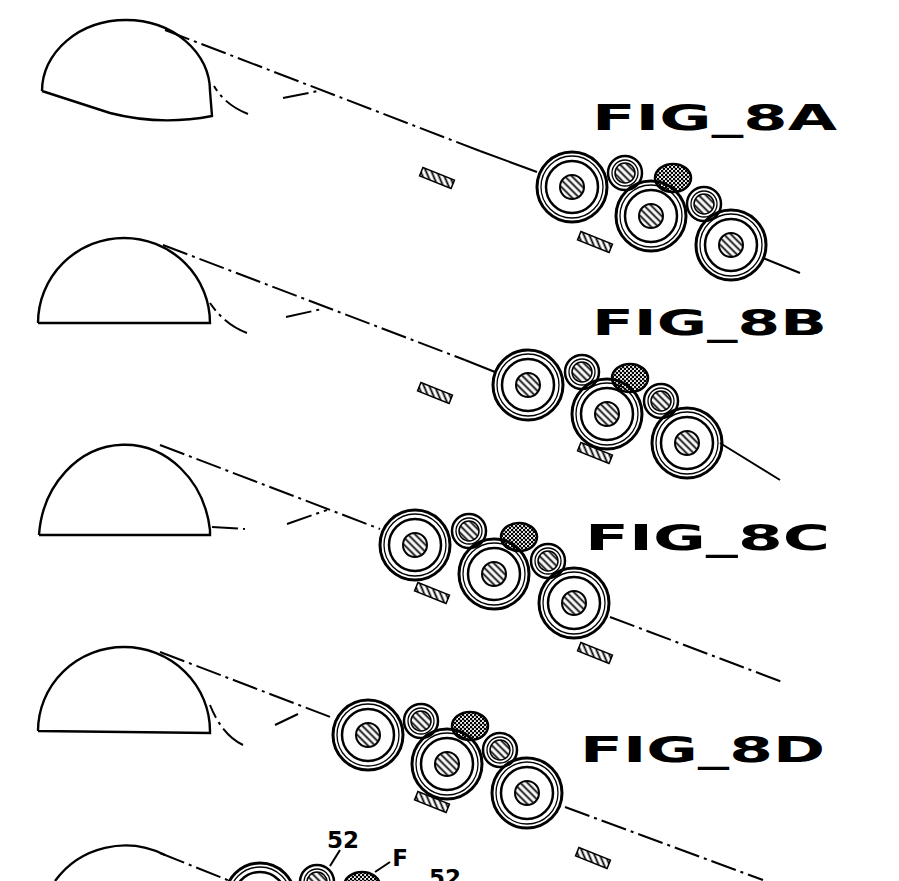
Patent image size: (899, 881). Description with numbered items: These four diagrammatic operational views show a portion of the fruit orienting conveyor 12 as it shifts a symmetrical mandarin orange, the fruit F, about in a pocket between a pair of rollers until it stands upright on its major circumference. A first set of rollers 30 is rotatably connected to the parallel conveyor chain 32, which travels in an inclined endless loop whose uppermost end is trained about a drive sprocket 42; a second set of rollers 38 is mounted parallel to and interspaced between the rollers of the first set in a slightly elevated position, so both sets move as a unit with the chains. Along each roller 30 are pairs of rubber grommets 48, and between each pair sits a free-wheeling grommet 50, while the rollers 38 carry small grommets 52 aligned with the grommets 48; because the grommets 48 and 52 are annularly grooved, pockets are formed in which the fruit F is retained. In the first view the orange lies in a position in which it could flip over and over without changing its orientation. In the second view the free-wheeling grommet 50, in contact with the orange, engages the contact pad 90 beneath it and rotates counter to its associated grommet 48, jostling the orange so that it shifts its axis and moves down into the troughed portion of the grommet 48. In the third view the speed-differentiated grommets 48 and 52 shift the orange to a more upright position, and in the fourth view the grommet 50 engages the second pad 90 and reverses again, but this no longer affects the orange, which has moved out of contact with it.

In FIG. 8A, the conveyor 12 is at (325, 85).
In FIG. 8B, the conveyor 12 is at (295, 293).
In FIG. 8C, the conveyor 12 is at (305, 495).
In FIG. 8D, the conveyor 12 is at (282, 692).
In FIG. 8A, the first set of rollers 30 is at (742, 246).
In FIG. 8B, the first set of rollers 30 is at (517, 385).
In FIG. 8C, the first set of rollers 30 is at (587, 603).
In FIG. 8D, the first set of rollers 30 is at (366, 722).
In FIG. 8A, the conveyor chain 32 is at (283, 98).
In FIG. 8B, the conveyor chain 32 is at (287, 317).
In FIG. 8C, the conveyor chain 32 is at (269, 524).
In FIG. 8D, the conveyor chain 32 is at (270, 727).
In FIG. 8A, the second set of rollers 38 is at (625, 166).
In FIG. 8B, the second set of rollers 38 is at (671, 400).
In FIG. 8C, the second set of rollers 38 is at (566, 559).
In FIG. 8D, the second set of rollers 38 is at (428, 712).
In FIG. 8A, the drive sprocket 42 is at (247, 108).
In FIG. 8B, the drive sprocket 42 is at (247, 325).
In FIG. 8C, the drive sprocket 42 is at (250, 545).
In FIG. 8D, the drive sprocket 42 is at (241, 733).
In FIG. 8A, the grommets 48 is at (556, 168).
In FIG. 8B, the grommets 48 is at (518, 363).
In FIG. 8C, the grommets 48 is at (401, 519).
In FIG. 8D, the grommets 48 is at (378, 700).
In FIG. 8A, the free-wheeling grommet 50 is at (578, 154).
In FIG. 8B, the free-wheeling grommet 50 is at (528, 350).
In FIG. 8C, the free-wheeling grommet 50 is at (428, 510).
In FIG. 8D, the free-wheeling grommet 50 is at (412, 773).
In FIG. 8A, the small grommets 52 is at (640, 162).
In FIG. 8B, the small grommets 52 is at (598, 362).
In FIG. 8C, the small grommets 52 is at (483, 521).
In FIG. 8D, the small grommets 52 is at (418, 705).
In FIG. 8A, the contact pad 90 is at (578, 240).
In FIG. 8B, the contact pad 90 is at (578, 450).
In FIG. 8C, the contact pad 90 is at (418, 598).
In FIG. 8D, the contact pad 90 is at (418, 802).
In FIG. 8A, the fruit F is at (692, 168).
In FIG. 8B, the fruit F is at (649, 371).
In FIG. 8C, the fruit F is at (535, 530).
In FIG. 8D, the fruit F is at (476, 712).